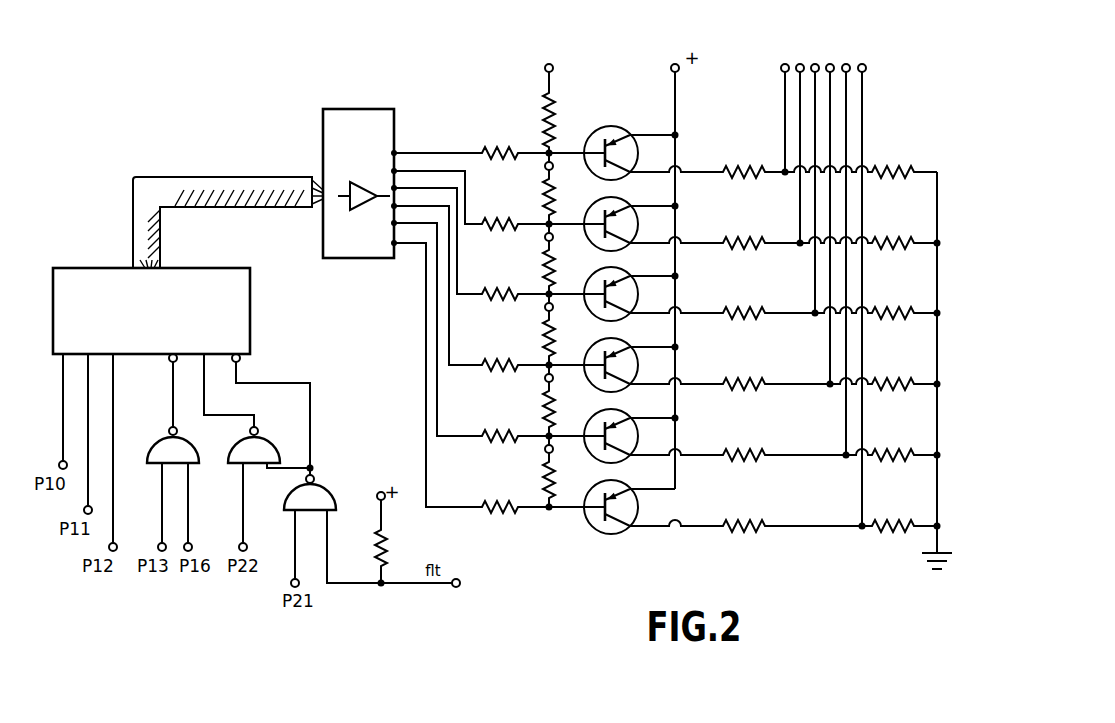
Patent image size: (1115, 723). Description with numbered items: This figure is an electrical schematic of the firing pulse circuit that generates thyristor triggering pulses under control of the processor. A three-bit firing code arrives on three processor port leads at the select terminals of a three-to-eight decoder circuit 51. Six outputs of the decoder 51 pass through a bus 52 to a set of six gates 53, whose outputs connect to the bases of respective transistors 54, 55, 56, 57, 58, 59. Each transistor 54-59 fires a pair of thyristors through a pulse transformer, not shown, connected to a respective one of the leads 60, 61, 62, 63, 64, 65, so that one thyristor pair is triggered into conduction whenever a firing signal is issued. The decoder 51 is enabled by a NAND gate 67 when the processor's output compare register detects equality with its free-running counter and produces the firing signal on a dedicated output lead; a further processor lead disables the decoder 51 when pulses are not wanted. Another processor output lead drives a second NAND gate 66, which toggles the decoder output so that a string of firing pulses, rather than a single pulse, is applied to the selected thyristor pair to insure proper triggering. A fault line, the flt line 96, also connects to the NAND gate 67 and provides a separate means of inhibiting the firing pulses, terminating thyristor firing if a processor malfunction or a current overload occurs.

The 3-to-8 decoder circuit 51 is at (105, 268).
The bus 52 is at (207, 177).
The set of six gates 53 is at (323, 122).
The transistor 54 is at (592, 135).
The transistor 55 is at (592, 208).
The transistor 56 is at (591, 278).
The transistor 57 is at (591, 348).
The transistor 58 is at (591, 419).
The transistor 59 is at (591, 490).
The lead 60 is at (782, 72).
The lead 61 is at (797, 64).
The lead 62 is at (814, 64).
The lead 63 is at (831, 64).
The lead 64 is at (848, 64).
The lead 65 is at (864, 72).
The second NAND gate 66 is at (273, 442).
The NAND gate 67 is at (331, 487).
The flt line 96 is at (460, 584).